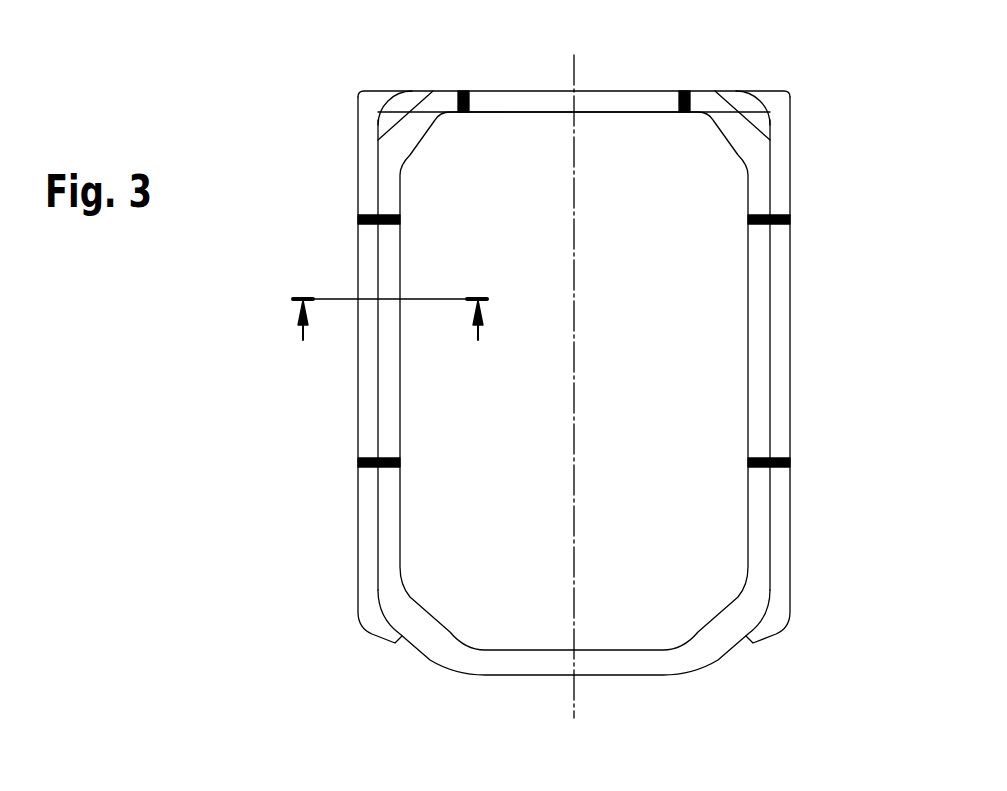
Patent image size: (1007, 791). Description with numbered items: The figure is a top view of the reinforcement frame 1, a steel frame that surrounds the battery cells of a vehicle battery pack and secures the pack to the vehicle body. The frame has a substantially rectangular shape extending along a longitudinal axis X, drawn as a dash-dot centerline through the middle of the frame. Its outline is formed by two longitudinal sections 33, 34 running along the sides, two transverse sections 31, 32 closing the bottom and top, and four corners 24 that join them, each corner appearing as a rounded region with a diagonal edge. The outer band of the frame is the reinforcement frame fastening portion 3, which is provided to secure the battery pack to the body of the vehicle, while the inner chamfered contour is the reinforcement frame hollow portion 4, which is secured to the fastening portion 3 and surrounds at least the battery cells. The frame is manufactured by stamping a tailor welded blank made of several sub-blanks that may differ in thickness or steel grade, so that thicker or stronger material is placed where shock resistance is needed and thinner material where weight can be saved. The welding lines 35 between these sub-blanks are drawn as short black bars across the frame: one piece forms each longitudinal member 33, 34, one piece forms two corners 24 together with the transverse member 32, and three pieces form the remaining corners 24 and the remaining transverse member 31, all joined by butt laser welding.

The reinforcement frame 1 is at (322, 60).
The reinforcement frame fastening portion 3 is at (806, 181).
The reinforcement frame hollow portion 4 is at (780, 304).
The corners 24 is at (382, 100).
The transverse section 31 is at (536, 692).
The transverse section 32 is at (626, 68).
The longitudinal section 33 is at (816, 375).
The longitudinal section 34 is at (320, 428).
The welding lines 35 is at (792, 220).
The longitudinal axis X is at (577, 695).